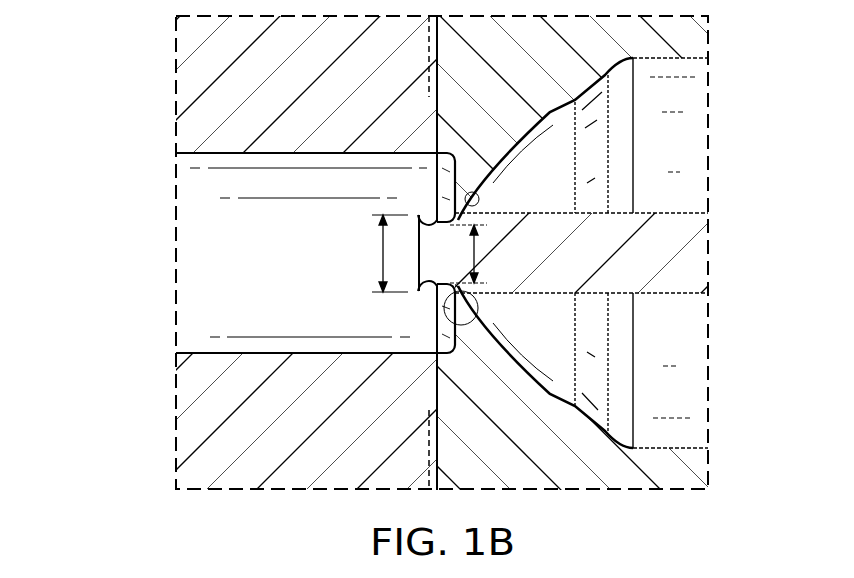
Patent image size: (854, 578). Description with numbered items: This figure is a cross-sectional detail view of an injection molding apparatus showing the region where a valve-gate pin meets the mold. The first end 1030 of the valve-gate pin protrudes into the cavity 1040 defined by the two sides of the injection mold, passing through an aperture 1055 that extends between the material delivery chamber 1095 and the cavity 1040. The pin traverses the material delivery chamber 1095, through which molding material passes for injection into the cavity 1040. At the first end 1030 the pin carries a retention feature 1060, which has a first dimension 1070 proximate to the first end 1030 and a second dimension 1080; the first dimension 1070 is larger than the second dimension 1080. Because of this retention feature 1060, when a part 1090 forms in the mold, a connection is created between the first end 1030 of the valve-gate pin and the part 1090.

The first end 1030 is at (422, 205).
The cavity 1040 is at (187, 293).
The aperture 1055 is at (480, 201).
The retention feature 1060 is at (478, 318).
The first dimension 1070 is at (383, 252).
The second dimension 1080 is at (485, 255).
The part 1090 is at (225, 153).
The material delivery chamber 1095 is at (700, 140).